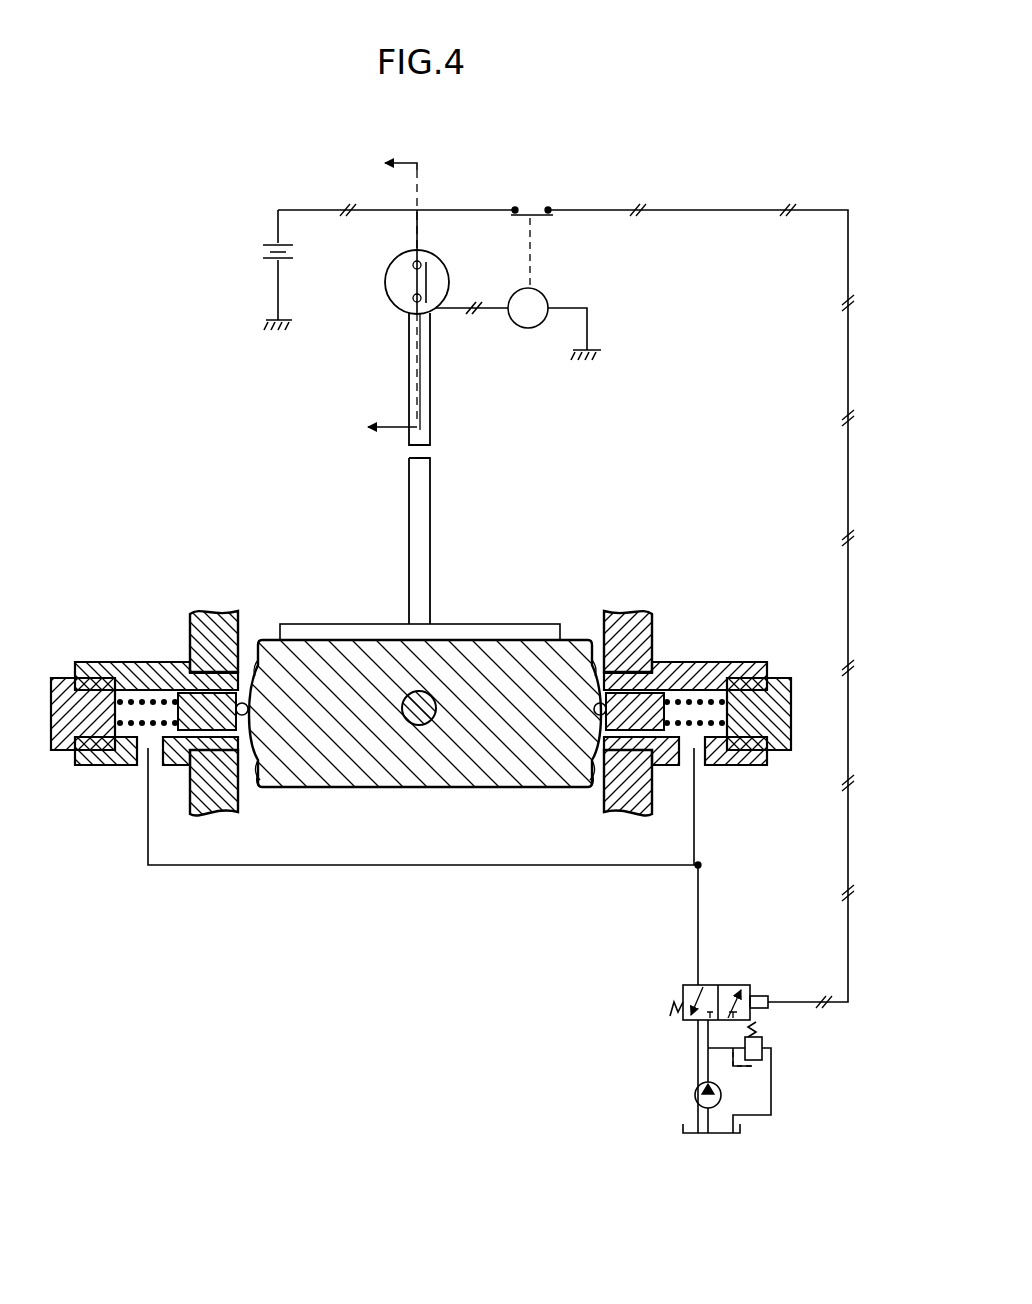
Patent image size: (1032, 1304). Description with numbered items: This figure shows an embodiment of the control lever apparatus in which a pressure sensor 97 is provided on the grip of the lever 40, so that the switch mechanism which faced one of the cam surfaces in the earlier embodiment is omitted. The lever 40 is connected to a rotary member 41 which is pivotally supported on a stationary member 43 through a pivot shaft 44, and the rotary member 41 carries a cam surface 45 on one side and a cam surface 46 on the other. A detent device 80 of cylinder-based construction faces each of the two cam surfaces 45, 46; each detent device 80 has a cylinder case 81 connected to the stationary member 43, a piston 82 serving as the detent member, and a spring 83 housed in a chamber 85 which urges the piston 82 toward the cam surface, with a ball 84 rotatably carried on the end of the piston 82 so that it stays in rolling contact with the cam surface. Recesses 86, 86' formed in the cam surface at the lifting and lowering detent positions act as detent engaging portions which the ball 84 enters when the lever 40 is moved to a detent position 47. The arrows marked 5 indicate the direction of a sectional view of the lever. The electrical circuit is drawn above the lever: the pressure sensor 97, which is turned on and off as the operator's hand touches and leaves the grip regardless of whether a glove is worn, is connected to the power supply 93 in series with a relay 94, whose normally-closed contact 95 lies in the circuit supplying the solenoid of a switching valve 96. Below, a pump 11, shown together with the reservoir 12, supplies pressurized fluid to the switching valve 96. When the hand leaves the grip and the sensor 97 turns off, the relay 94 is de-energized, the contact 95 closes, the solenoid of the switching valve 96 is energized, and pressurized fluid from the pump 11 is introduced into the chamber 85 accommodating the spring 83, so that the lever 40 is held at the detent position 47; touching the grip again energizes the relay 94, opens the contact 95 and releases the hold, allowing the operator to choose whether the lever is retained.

The section line for FIG. 5 is at (377, 295).
The pump 11 is at (695, 1095).
The reservoir 12 is at (682, 1127).
The lever 40 is at (425, 415).
The rotary member 41 is at (458, 640).
The stationary member 43 is at (192, 640).
The pivot shaft 44 is at (421, 726).
The cam surface 45 is at (244, 718).
The cam surface 46 is at (600, 718).
The detent position 47 is at (386, 290).
The detent device 80 is at (768, 660).
The cylinder case 81 is at (80, 662).
The piston 82 is at (165, 768).
The spring 83 is at (160, 700).
The ball 84 is at (330, 787).
The chamber 85 is at (142, 742).
The recess 86 is at (416, 702).
The recess 86' is at (427, 704).
The power supply 93 is at (262, 252).
The relay 94 is at (550, 300).
The normally-closed contact 95 is at (525, 212).
The switching valve 96 is at (742, 986).
The pressure sensor 97 is at (428, 282).